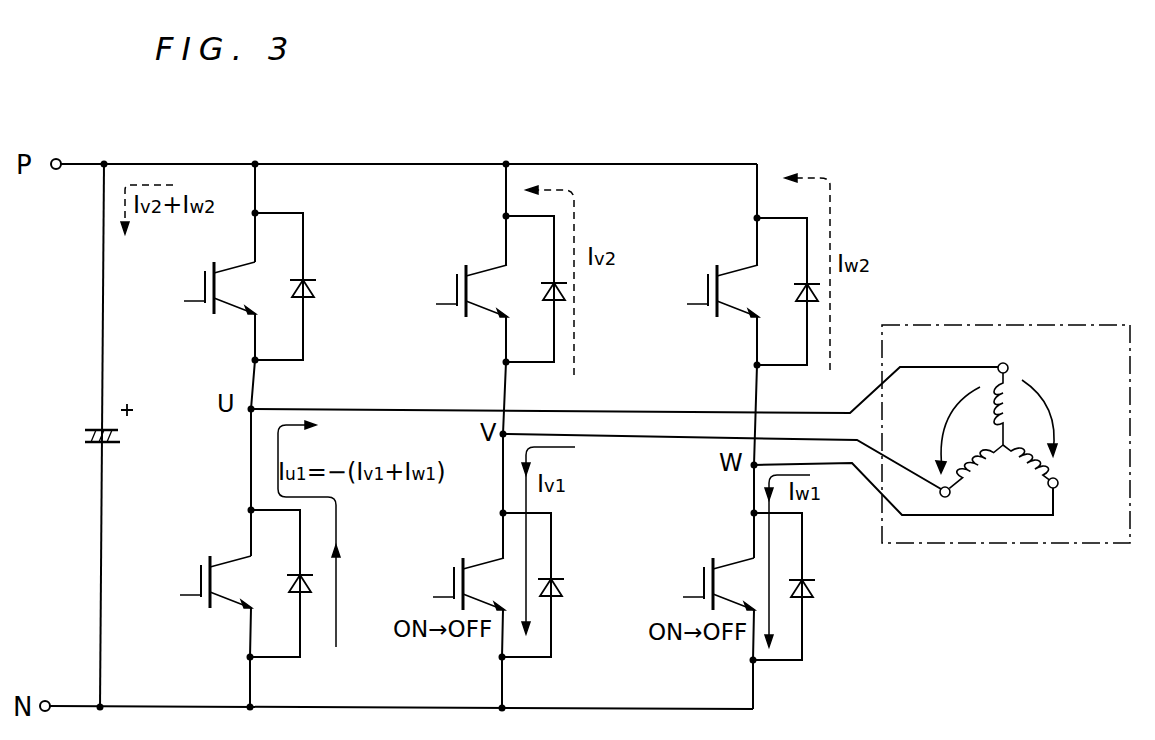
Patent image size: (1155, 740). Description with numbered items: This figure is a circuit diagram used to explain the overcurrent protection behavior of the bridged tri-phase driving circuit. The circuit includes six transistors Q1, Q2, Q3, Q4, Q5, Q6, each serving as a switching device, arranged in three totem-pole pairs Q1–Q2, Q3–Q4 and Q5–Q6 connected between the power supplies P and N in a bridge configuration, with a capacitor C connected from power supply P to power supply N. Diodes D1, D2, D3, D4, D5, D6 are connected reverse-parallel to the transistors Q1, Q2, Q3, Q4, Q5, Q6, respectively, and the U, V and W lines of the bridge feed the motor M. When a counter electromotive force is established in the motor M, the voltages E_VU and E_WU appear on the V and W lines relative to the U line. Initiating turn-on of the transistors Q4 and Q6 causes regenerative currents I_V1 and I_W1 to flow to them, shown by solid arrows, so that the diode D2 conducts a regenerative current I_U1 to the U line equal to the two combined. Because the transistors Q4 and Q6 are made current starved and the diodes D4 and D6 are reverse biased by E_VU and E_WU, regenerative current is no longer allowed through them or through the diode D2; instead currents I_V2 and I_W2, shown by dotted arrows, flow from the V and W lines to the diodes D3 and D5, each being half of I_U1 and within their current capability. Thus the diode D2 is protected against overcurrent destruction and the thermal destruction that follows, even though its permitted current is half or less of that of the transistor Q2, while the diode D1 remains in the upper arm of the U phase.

The transistor Q1 is at (204, 286).
The transistor Q2 is at (200, 577).
The transistor Q3 is at (456, 281).
The transistor Q4 is at (452, 575).
The transistor Q5 is at (707, 281).
The transistor Q6 is at (703, 575).
The diode D1 is at (314, 292).
The diode D2 is at (309, 579).
The diode D3 is at (564, 287).
The diode D4 is at (559, 590).
The diode D5 is at (817, 290).
The diode D6 is at (811, 590).
The capacitor C is at (95, 441).
The motor M is at (960, 544).